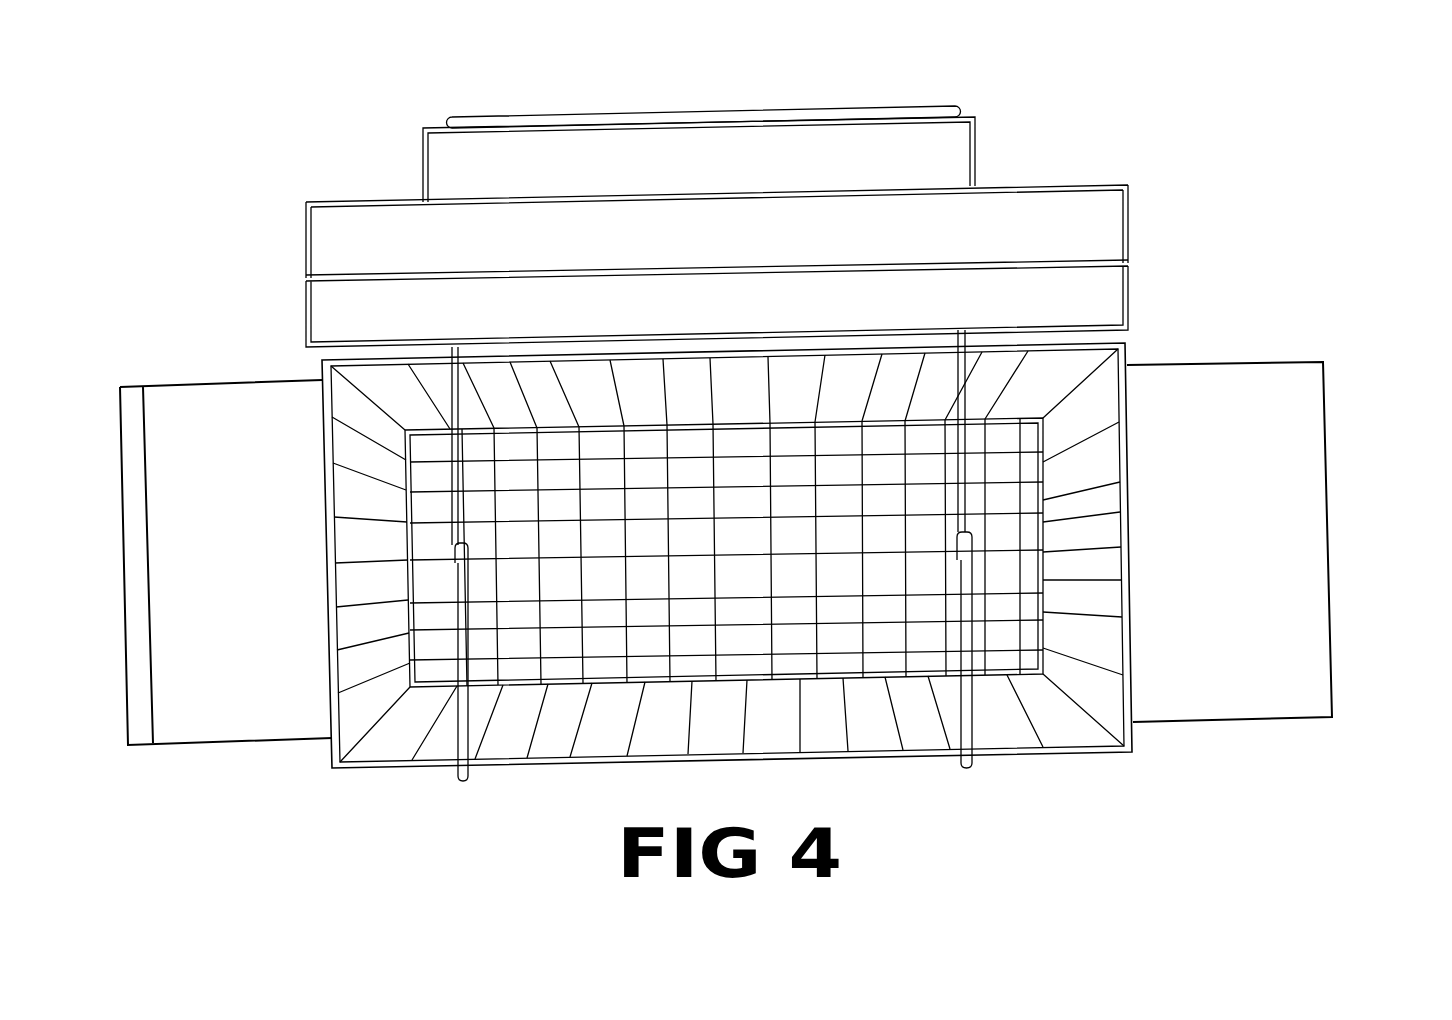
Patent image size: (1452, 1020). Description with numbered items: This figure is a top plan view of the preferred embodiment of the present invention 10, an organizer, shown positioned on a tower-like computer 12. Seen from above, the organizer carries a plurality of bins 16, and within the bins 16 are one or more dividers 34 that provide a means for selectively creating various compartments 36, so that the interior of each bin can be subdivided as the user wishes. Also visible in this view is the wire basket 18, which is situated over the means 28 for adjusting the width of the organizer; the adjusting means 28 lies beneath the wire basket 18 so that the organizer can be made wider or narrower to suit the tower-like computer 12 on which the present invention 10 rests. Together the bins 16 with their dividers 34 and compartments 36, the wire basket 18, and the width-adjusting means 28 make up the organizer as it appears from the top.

The present invention 10 is at (783, 501).
The tower-like computer 12 is at (1302, 666).
The bins 16 is at (727, 226).
The wire basket 18 is at (410, 763).
The means for adjusting the width of the organizer 28 is at (662, 600).
The dividers 34 is at (1020, 262).
The compartments 36 is at (377, 225).